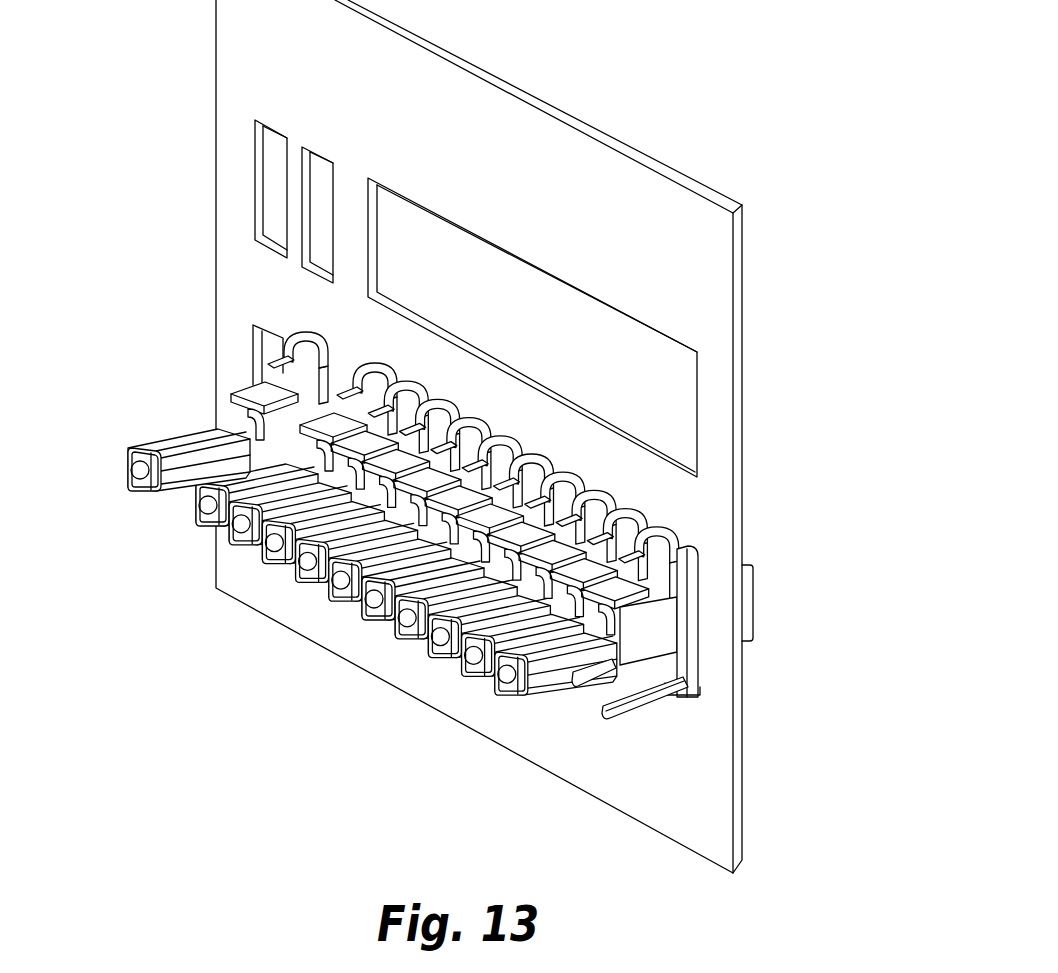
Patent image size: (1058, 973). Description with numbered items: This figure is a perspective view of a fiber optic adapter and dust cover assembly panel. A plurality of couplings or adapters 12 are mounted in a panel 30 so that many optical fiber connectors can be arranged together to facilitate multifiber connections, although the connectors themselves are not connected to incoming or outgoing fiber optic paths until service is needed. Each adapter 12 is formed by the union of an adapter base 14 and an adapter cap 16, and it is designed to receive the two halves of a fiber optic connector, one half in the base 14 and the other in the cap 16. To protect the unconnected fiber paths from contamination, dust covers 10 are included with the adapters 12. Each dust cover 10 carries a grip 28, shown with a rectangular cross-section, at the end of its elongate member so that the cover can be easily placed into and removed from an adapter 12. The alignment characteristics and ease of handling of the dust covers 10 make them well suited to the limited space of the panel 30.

The dust cover 10 is at (143, 440).
The LC buildout adapter 12 is at (703, 643).
The adapter base 14 is at (753, 600).
The adapter cap 16 is at (603, 713).
The grip 28 is at (128, 460).
The panel 30 is at (231, 46).